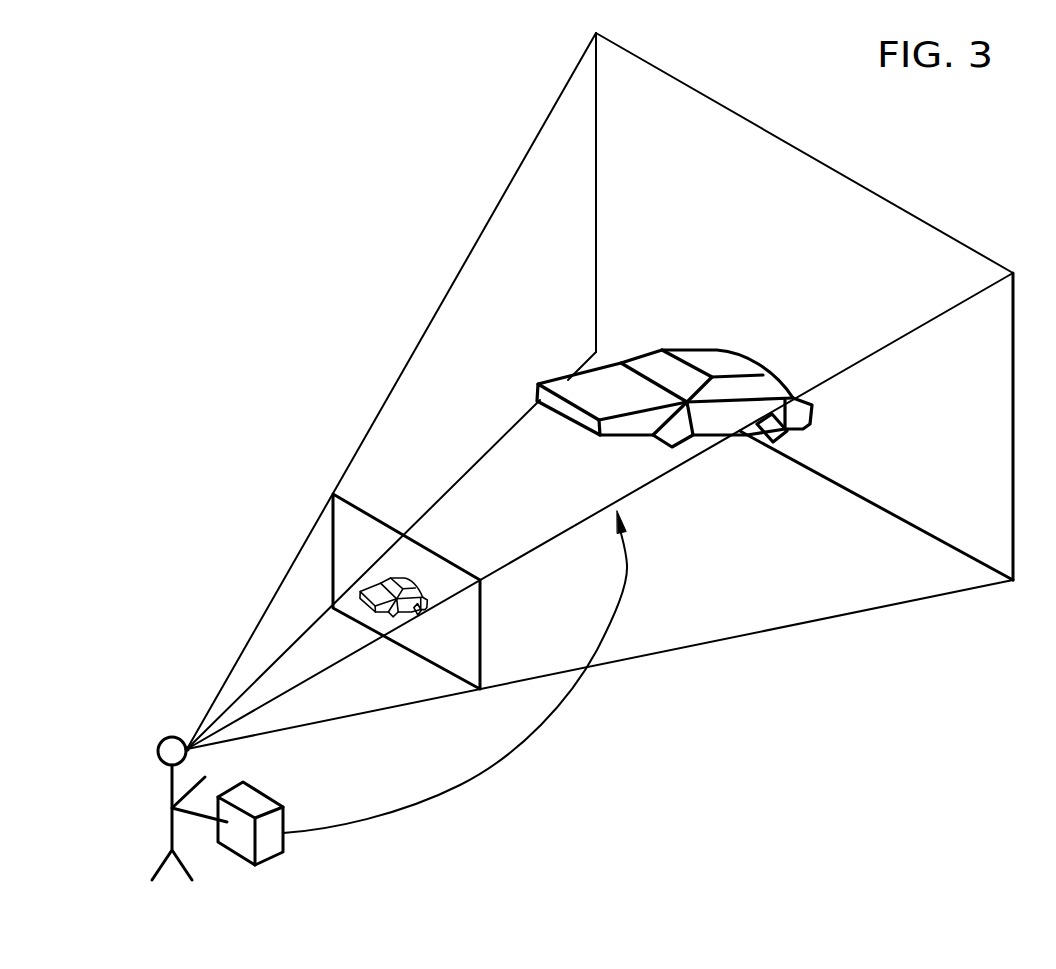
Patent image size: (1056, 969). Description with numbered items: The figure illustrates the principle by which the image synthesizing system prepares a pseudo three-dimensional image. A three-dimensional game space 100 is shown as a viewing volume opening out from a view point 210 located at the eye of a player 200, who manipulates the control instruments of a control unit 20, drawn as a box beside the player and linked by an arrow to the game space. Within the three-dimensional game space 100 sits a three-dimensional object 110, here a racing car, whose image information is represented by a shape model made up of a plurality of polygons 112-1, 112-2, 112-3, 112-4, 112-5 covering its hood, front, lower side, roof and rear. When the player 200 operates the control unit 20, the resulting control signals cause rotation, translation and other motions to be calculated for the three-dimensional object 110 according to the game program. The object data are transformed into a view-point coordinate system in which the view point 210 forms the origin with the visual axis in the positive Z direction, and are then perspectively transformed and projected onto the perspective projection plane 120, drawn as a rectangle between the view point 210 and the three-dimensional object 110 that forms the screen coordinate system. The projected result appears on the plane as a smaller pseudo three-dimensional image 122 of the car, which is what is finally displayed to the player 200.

The 3-D game space 100 is at (330, 209).
The 3-D object 110 is at (654, 386).
The polygon 112-1 is at (573, 381).
The polygon 112-2 is at (623, 429).
The polygon 112-3 is at (567, 412).
The polygon 112-4 is at (673, 437).
The polygon 112-5 is at (787, 436).
The perspective projection plane 120 is at (443, 658).
The pseudo 3-D image 122 is at (383, 580).
The player 200 is at (162, 736).
The view point 210 is at (192, 752).
The control unit 20 is at (275, 797).